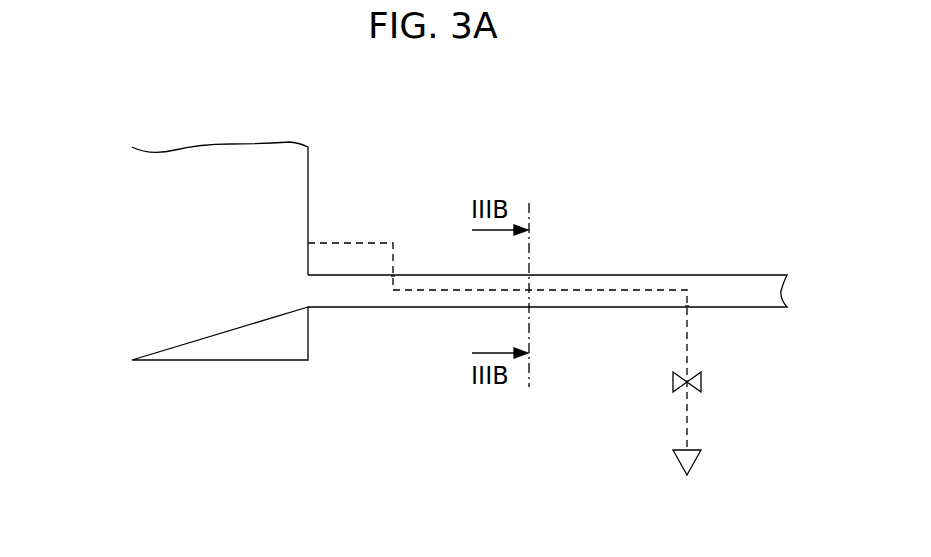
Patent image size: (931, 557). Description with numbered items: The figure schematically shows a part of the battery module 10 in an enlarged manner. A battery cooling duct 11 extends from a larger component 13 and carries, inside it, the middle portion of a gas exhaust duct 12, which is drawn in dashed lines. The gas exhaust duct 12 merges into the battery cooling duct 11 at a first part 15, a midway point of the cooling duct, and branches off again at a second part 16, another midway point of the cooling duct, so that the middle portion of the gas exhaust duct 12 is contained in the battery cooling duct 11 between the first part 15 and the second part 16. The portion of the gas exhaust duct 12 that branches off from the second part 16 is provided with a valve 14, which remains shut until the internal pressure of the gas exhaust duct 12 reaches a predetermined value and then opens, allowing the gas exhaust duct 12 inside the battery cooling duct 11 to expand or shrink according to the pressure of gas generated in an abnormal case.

The battery module 10 is at (600, 140).
The battery cooling duct 11 is at (716, 275).
The gas exhaust duct 12 is at (360, 242).
The tank 13 is at (132, 228).
The valve 14 is at (701, 381).
The first part 15 is at (393, 275).
The second part 16 is at (687, 307).